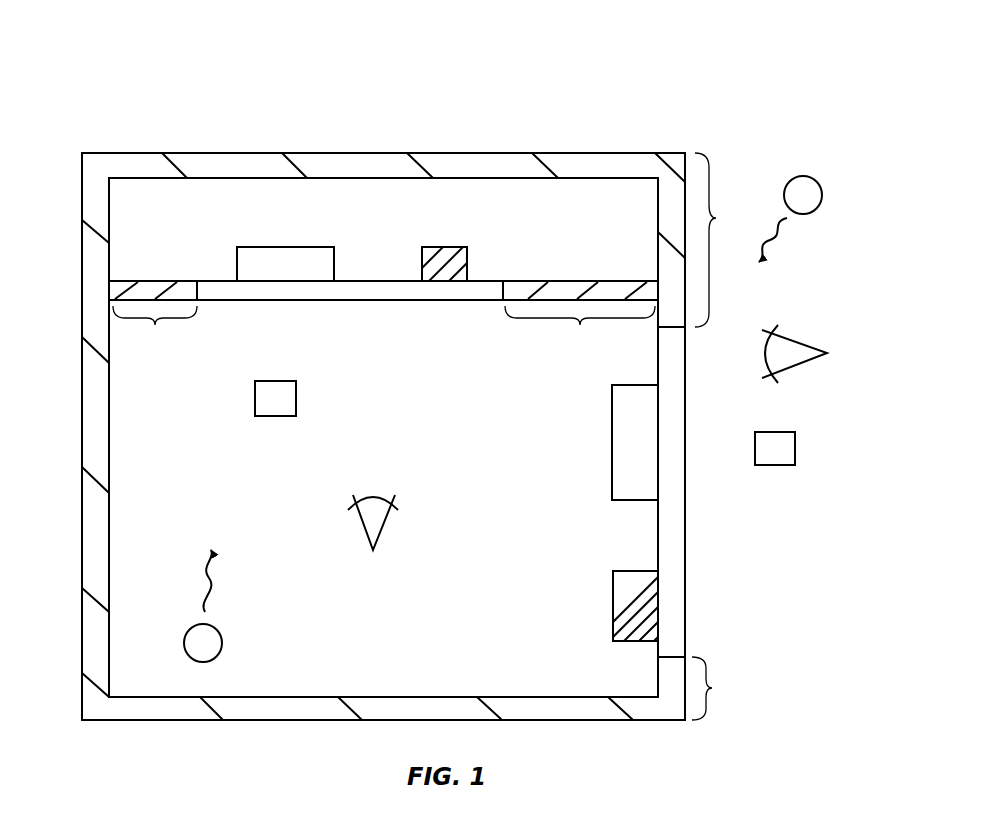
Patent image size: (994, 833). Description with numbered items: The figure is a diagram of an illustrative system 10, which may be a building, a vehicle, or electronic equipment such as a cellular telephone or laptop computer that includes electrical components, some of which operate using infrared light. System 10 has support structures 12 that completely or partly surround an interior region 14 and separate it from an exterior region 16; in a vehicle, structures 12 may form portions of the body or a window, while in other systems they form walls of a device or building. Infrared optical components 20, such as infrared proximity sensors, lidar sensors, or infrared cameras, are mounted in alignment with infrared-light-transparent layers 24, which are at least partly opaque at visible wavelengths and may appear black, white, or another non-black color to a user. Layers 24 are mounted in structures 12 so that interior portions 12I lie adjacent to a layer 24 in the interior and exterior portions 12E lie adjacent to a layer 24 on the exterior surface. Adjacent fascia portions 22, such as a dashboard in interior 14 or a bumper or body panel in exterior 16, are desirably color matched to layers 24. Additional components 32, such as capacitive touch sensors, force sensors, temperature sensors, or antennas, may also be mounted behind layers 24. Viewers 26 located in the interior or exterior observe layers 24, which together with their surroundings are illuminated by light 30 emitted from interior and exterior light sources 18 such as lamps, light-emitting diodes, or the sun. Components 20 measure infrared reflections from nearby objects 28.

The system 10 is at (612, 73).
The support structures 12 is at (298, 708).
The exterior portions of structures 12E is at (668, 206).
The interior portions of structures 12I is at (151, 290).
The interior region 14 is at (127, 571).
The exterior region 16 is at (755, 578).
The light sources 18 is at (222, 645).
The infrared optical components 20 is at (334, 262).
The fascia portions 22 is at (430, 436).
The infrared-light-transparent layers 24 is at (380, 302).
The viewers 26 is at (383, 523).
The objects 28 is at (296, 398).
The light 30 is at (207, 575).
The components 32 is at (467, 258).